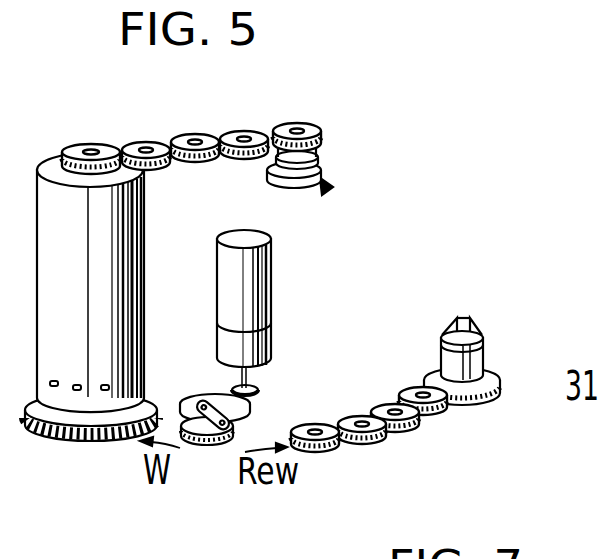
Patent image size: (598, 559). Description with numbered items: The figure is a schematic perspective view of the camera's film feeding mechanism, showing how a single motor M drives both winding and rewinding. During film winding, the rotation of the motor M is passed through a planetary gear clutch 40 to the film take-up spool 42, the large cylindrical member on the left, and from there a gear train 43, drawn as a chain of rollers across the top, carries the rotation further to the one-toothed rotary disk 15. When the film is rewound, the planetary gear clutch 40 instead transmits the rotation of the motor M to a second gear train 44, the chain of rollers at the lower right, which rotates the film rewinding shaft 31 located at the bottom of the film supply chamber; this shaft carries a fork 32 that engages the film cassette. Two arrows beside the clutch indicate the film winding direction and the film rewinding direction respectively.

The one-toothed rotary disk 15 is at (330, 180).
The film rewinding shaft 31 is at (495, 342).
The fork 32 is at (468, 322).
The planetary gear clutch 40 is at (207, 452).
The film take-up spool 42 is at (112, 254).
The gear train 43 is at (307, 116).
The gear train 44 is at (499, 411).
The motor M is at (273, 293).